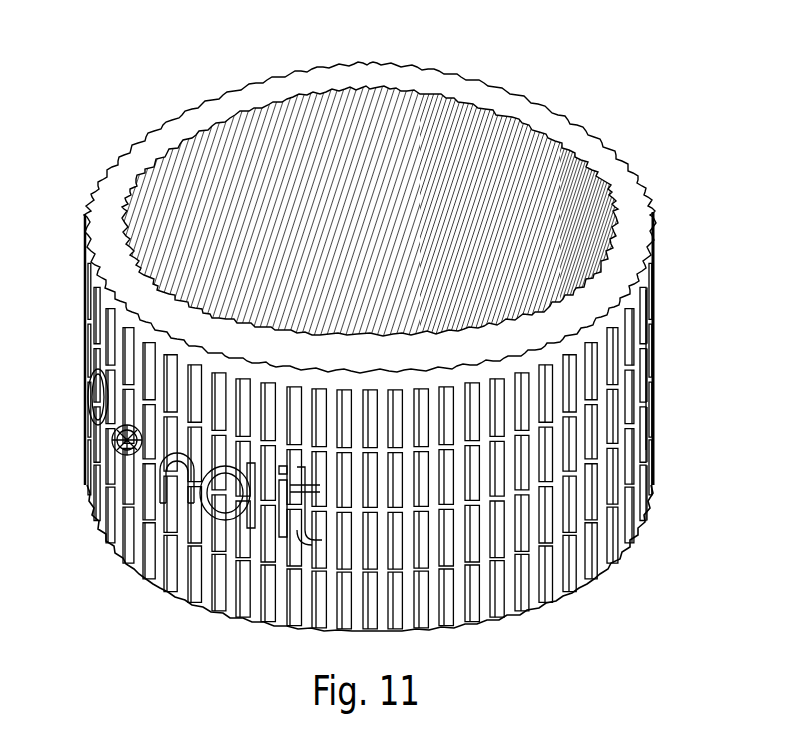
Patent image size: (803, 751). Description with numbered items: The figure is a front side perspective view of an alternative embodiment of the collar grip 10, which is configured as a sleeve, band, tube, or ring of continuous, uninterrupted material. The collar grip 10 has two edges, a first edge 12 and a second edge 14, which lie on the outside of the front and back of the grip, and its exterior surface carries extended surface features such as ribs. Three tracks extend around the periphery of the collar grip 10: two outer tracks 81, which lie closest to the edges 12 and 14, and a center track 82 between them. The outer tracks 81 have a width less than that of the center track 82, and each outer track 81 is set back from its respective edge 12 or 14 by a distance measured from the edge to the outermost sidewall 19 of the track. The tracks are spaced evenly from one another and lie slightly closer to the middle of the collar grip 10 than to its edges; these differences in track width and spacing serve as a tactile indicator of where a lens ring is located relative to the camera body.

The collar grip 10 is at (108, 114).
The first edge 12 is at (508, 100).
The second edge 14 is at (567, 585).
The outermost sidewall 19 is at (473, 440).
The outer tracks 81 is at (655, 342).
The center track 82 is at (655, 392).